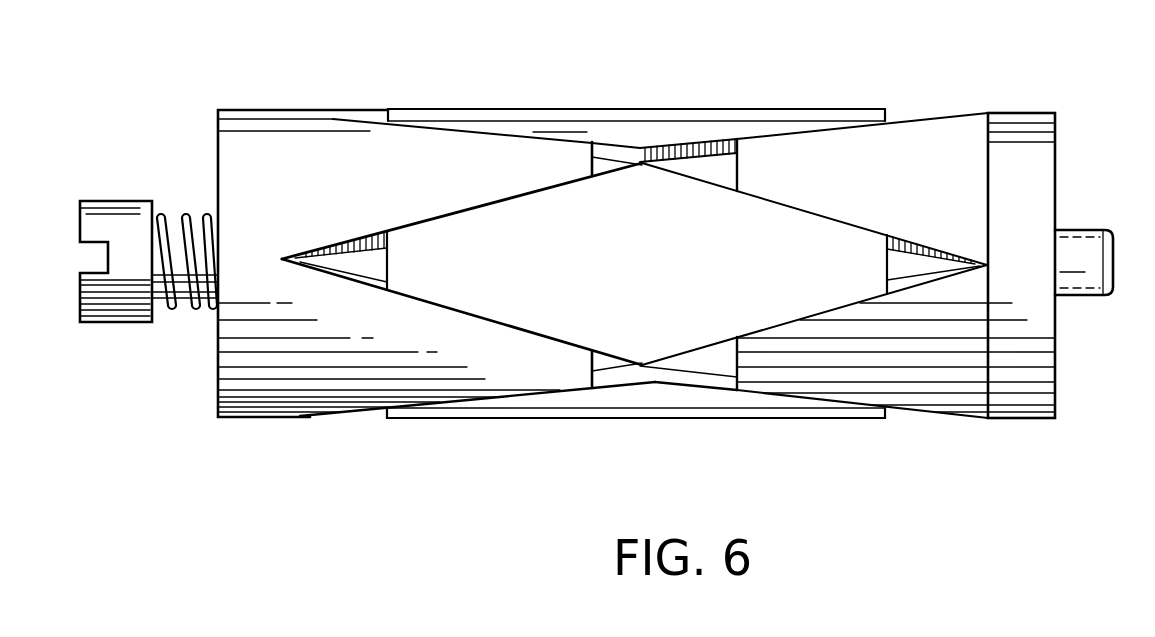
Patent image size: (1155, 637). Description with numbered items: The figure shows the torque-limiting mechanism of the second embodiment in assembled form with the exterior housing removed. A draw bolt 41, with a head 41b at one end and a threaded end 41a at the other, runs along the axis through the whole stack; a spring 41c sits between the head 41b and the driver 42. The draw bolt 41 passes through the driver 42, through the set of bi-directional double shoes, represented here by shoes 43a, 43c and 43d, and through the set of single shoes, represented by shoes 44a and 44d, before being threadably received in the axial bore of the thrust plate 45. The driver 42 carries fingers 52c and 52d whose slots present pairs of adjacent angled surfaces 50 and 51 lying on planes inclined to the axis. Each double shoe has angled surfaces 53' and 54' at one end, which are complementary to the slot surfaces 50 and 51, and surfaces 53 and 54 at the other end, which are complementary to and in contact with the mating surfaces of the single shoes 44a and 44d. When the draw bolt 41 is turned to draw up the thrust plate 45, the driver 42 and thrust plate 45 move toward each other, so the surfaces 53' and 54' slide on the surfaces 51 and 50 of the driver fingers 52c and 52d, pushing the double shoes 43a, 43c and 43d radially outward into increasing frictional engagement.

The draw bolt 41 is at (184, 310).
The threaded end 41a is at (1072, 225).
The head 41b is at (130, 200).
The spring 41c is at (193, 213).
The driver 42 is at (308, 392).
The double shoe 43a is at (643, 127).
The double shoe 43c is at (715, 405).
The double shoe 43d is at (542, 317).
The single shoe 44a is at (903, 133).
The single shoe 44d is at (933, 400).
The thrust plate 45 is at (1007, 113).
The slot surface 50 is at (360, 235).
The slot surface 51 is at (327, 247).
The driver finger 52c is at (423, 375).
The driver finger 52d is at (443, 157).
The shoe surface 53 is at (700, 98).
The shoe surface 53' is at (582, 105).
The shoe surface 54 is at (683, 428).
The shoe surface 54' is at (612, 421).